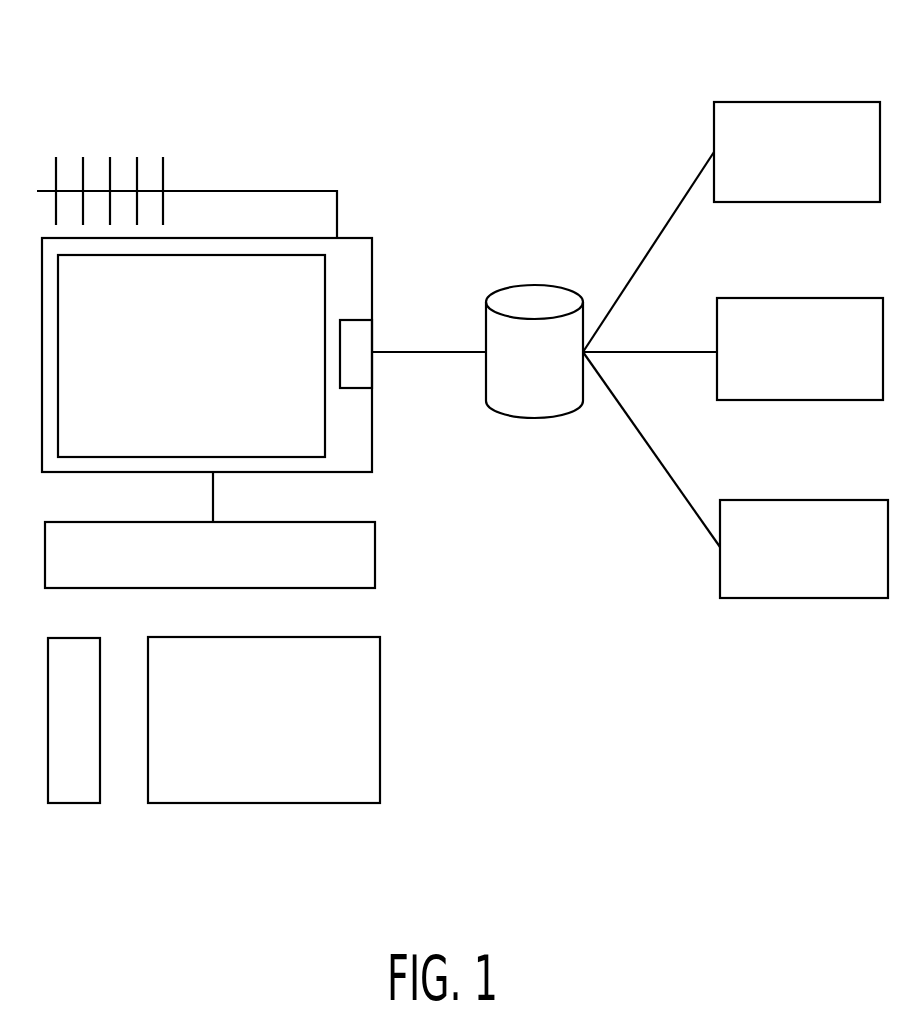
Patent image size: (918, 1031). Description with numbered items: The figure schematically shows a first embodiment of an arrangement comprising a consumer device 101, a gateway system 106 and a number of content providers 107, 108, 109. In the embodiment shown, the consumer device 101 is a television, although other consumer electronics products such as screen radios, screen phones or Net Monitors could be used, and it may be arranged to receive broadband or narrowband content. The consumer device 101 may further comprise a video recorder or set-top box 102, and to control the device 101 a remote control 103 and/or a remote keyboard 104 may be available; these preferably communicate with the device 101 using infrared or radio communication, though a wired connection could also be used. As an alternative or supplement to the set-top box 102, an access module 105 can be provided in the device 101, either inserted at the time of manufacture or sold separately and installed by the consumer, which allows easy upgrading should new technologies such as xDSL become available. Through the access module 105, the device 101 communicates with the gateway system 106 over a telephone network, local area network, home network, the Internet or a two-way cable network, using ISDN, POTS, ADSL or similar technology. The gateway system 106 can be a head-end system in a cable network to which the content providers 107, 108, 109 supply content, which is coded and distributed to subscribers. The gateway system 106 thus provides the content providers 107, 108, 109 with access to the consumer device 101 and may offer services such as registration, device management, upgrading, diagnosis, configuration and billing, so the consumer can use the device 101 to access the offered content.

The consumer device 101 is at (372, 273).
The video recorder or set-top box 102 is at (375, 551).
The remote control 103 is at (73, 803).
The remote keyboard 104 is at (267, 803).
The access module 105 is at (363, 372).
The gateway system 106 is at (535, 418).
The content provider 107 is at (797, 100).
The content provider 108 is at (800, 298).
The content provider 109 is at (815, 598).